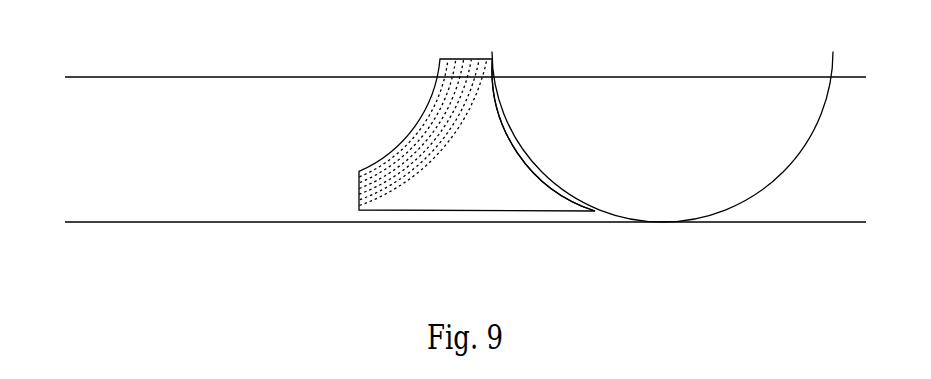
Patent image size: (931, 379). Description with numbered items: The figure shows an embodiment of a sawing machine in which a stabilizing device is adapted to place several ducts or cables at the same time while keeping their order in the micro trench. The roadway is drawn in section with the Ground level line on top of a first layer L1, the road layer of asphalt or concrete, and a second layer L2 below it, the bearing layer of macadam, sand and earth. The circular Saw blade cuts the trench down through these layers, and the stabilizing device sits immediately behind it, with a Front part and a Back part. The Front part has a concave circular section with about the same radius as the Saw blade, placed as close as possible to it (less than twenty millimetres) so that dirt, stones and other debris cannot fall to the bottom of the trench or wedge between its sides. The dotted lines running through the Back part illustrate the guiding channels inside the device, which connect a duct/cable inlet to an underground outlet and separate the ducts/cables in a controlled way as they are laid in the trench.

The ground level Ground level is at (465, 61).
The first layer L1 is at (465, 66).
The second layer L2 is at (465, 180).
The saw blade Saw blade is at (662, 137).
The back part Back part is at (355, 185).
The front part Front part is at (507, 152).